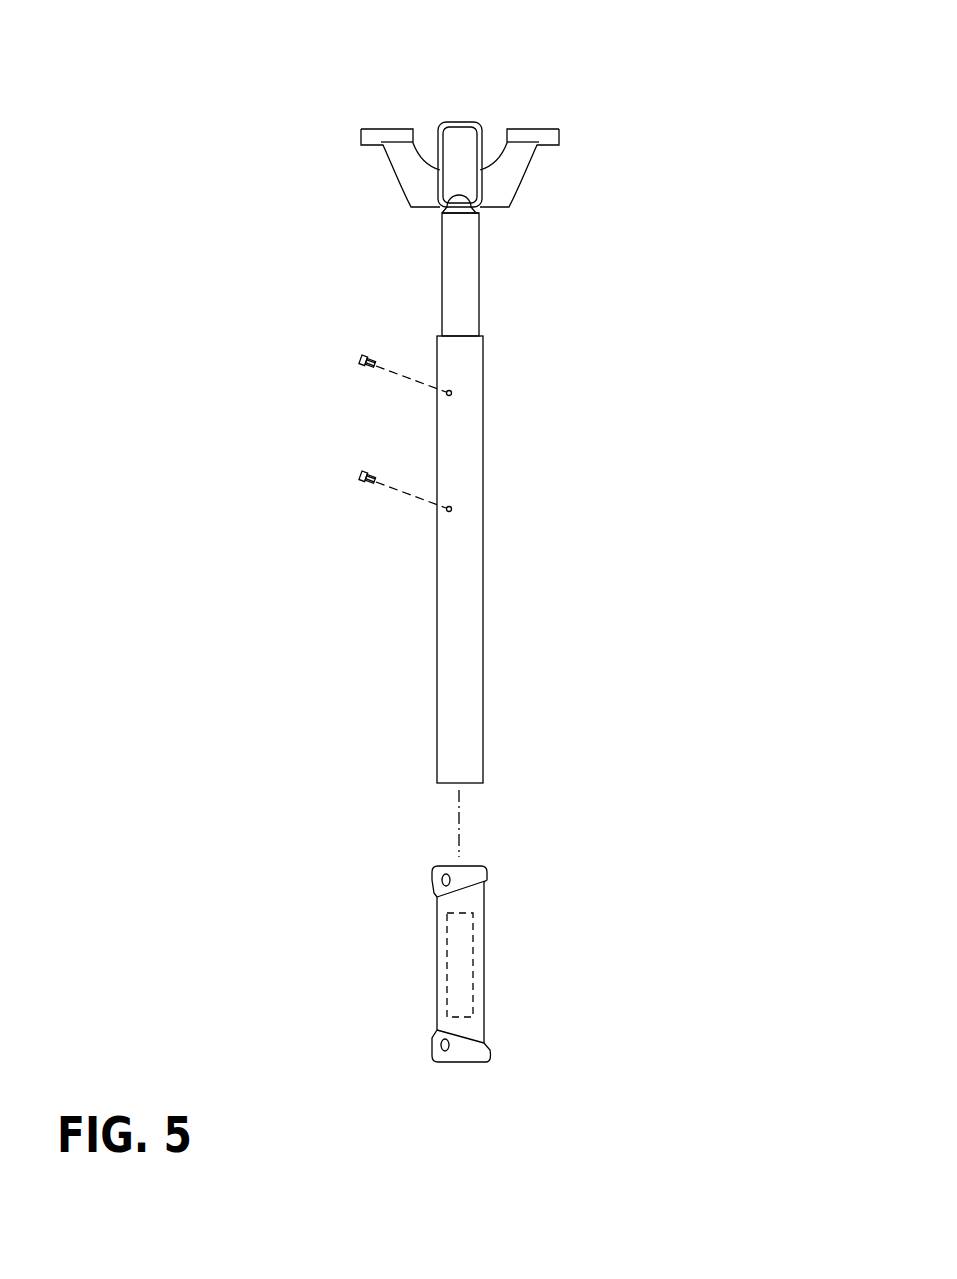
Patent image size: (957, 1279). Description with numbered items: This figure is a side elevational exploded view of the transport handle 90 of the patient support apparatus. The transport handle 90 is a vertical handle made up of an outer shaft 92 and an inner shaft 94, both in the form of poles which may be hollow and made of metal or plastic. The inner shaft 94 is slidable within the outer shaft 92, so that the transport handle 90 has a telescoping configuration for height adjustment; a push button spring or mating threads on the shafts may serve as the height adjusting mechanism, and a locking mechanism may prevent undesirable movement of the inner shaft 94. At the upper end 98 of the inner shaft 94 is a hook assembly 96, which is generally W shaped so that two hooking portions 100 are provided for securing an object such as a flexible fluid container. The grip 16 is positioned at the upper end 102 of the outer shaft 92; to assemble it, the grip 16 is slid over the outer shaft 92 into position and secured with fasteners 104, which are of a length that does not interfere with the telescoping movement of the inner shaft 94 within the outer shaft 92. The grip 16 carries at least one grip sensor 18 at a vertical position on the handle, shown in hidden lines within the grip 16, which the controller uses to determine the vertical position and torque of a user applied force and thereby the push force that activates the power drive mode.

The transport handle 90 is at (668, 130).
The outer shaft 92 is at (483, 608).
The inner shaft 94 is at (481, 305).
The hook assembly 96 is at (404, 124).
The upper end 98 is at (486, 227).
The hooking portions 100 is at (427, 127).
The upper end 102 is at (488, 392).
The fasteners 104 is at (362, 362).
The grip 16 is at (487, 910).
The grip sensor 18 is at (447, 950).